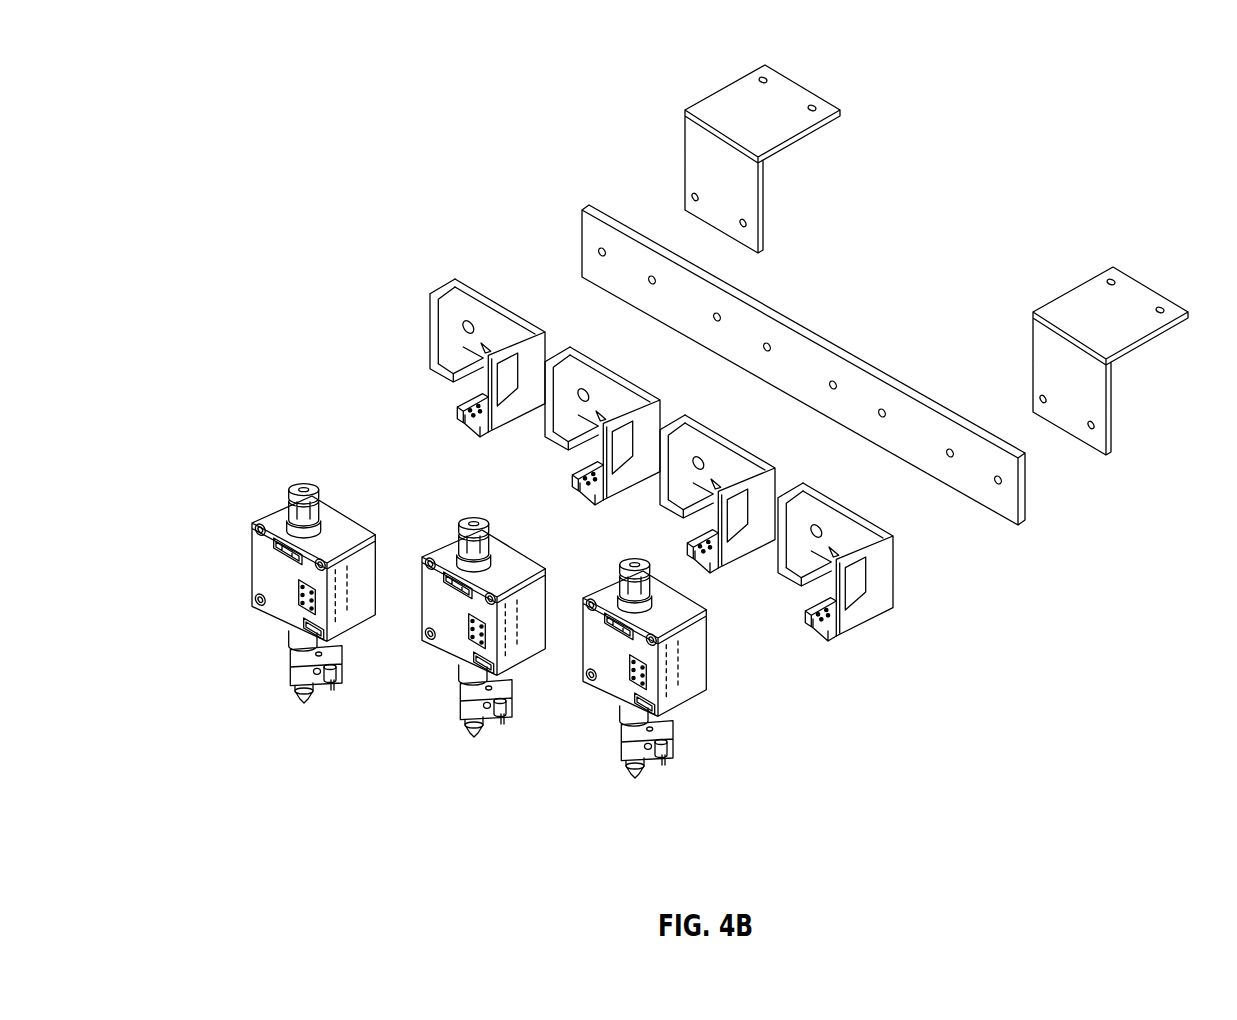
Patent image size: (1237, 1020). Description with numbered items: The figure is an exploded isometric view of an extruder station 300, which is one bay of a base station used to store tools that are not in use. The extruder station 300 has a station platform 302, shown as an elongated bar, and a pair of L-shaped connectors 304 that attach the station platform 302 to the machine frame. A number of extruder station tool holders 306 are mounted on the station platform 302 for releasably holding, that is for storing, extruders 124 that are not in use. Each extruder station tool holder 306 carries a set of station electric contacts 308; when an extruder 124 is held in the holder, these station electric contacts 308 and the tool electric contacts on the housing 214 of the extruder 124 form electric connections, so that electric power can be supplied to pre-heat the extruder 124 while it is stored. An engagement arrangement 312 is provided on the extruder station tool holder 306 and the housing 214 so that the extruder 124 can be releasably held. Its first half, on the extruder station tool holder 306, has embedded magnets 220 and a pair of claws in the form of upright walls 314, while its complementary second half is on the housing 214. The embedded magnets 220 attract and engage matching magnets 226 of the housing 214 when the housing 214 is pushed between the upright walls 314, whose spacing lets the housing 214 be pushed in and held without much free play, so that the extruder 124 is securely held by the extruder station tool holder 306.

The extruder station 300 is at (1042, 138).
The station platform 302 is at (805, 355).
The L-shaped connectors 304 is at (772, 108).
The extruder station tool holder 306 is at (422, 312).
The engagement arrangement 312 is at (409, 301).
The upright walls 314 is at (396, 378).
The extruder 124 is at (261, 555).
The housing 214 is at (306, 524).
The embedded magnets 220 is at (882, 602).
The magnets 226 is at (673, 687).
The station electric contacts 308 is at (826, 660).